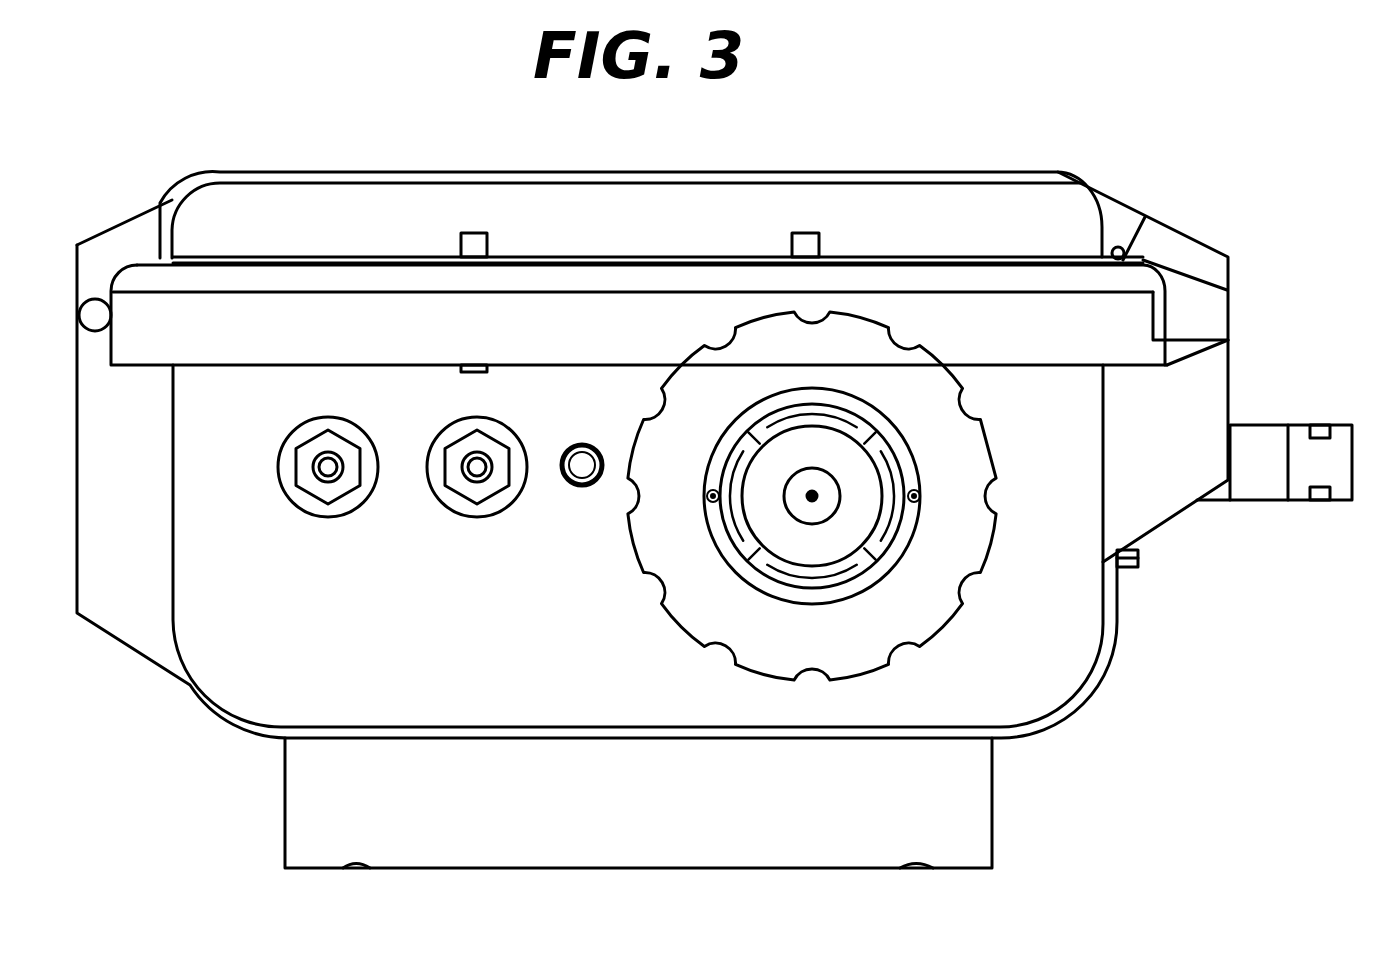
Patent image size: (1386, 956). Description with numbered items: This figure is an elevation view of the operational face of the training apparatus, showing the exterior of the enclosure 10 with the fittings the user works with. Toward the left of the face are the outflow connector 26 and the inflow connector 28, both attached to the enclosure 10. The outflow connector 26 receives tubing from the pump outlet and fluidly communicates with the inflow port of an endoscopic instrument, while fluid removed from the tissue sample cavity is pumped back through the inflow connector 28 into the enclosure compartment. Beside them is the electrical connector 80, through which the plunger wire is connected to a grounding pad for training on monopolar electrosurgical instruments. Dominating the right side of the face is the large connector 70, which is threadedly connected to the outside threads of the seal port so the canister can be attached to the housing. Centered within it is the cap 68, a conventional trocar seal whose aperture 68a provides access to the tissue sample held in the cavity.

The enclosure 10 is at (1212, 397).
The outflow connector 26 is at (310, 500).
The inflow connector 28 is at (460, 498).
The electrical connector 80 is at (588, 483).
The connector 70 is at (935, 625).
The cap 68 is at (853, 540).
The aperture 68a is at (814, 494).